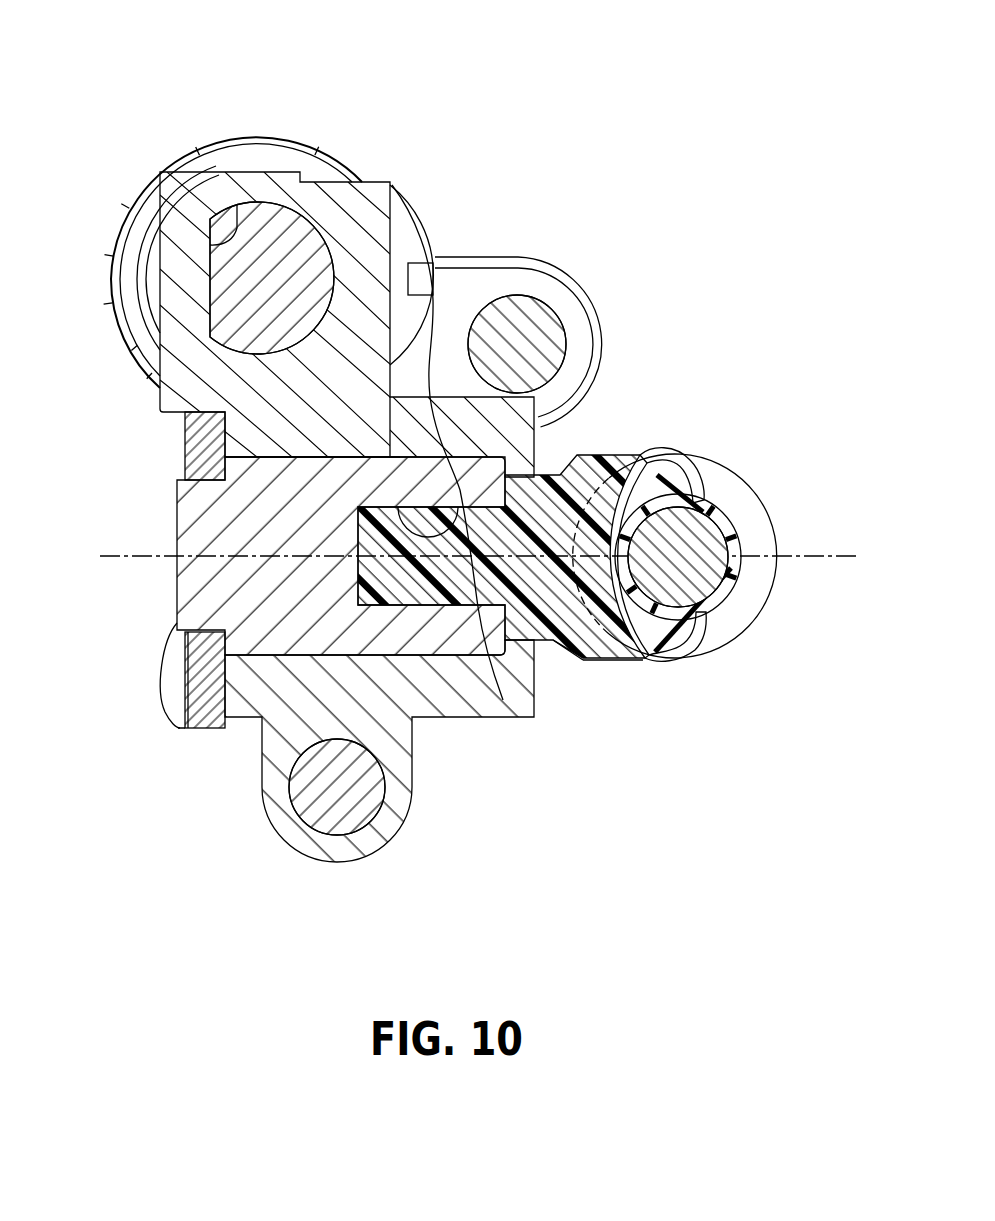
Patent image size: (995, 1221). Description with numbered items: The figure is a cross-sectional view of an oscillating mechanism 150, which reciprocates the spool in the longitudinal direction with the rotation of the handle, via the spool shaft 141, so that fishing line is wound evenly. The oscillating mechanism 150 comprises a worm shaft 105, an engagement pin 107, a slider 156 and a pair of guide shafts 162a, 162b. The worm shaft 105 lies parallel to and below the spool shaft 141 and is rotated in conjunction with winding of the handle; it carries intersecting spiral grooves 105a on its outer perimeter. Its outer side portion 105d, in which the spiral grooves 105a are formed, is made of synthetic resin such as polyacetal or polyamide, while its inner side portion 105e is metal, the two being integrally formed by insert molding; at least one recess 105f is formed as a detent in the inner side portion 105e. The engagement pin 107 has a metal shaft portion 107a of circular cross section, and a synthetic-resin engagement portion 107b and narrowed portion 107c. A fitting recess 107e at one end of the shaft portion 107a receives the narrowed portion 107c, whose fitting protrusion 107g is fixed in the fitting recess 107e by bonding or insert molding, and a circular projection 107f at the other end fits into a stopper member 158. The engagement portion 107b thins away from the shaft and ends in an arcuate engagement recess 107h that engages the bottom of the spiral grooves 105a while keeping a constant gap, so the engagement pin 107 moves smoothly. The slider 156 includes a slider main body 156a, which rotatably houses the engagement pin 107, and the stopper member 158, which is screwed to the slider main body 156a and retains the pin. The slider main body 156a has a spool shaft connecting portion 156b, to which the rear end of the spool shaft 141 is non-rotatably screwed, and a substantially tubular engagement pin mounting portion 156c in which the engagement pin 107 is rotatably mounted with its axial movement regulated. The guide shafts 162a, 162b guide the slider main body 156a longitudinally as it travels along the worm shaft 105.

The worm shaft 105 is at (705, 445).
The spiral grooves 105a is at (702, 492).
The outer side portion 105d is at (733, 535).
The inner side portion 105e is at (645, 657).
The recess 105f is at (727, 555).
The engagement pin 107 is at (598, 432).
The shaft portion 107a is at (432, 664).
The engagement portion 107b is at (600, 672).
The narrowed portion 107c is at (547, 652).
The fitting recess 107e is at (437, 300).
The circular projection 107f is at (177, 573).
The fitting protrusion 107g is at (505, 703).
The engagement recess 107h is at (700, 623).
The spool shaft 141 is at (268, 240).
The oscillating mechanism 150 is at (492, 770).
The slider 156 is at (383, 170).
The slider main body 156a is at (235, 733).
The spool shaft connecting portion 156b is at (178, 172).
The engagement pin mounting portion 156c is at (303, 457).
The stopper member 158 is at (185, 443).
The guide shaft 162a is at (527, 340).
The guide shaft 162b is at (317, 790).